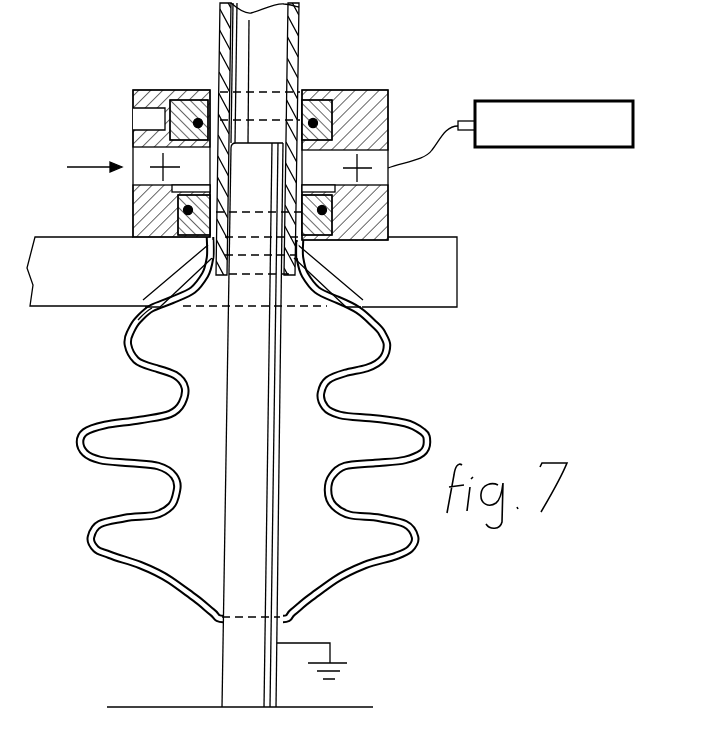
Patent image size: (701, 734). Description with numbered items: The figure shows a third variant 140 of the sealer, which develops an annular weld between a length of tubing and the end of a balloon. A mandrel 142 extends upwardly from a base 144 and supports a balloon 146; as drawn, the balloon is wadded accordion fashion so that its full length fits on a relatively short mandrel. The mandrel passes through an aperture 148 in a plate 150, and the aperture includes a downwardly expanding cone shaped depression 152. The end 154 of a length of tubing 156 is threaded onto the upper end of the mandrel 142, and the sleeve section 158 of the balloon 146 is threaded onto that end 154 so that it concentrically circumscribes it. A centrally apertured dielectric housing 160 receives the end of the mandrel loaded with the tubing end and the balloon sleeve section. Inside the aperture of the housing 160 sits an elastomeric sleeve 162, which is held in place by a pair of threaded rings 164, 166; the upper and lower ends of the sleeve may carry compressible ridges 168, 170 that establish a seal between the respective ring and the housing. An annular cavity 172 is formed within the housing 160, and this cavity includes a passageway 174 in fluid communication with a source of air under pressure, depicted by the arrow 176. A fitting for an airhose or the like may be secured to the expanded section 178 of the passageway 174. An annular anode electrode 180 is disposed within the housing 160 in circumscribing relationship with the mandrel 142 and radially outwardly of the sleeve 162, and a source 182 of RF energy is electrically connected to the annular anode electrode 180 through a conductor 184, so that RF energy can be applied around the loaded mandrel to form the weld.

The variant 140 is at (432, 618).
The mandrel 142 is at (222, 653).
The base 144 is at (167, 705).
The balloon 146 is at (428, 432).
The aperture 148 is at (207, 243).
The plate 150 is at (57, 308).
The cone shaped depression 152 is at (137, 306).
The end of tubing 154 is at (211, 306).
The length of tubing 156 is at (299, 30).
The sleeve section 158 is at (320, 300).
The dielectric housing 160 is at (389, 133).
The elastomeric sleeve 162 is at (347, 192).
The threaded ring 164 is at (310, 90).
The threaded ring 166 is at (323, 240).
The compressible ridge 168 is at (320, 122).
The compressible ridge 170 is at (325, 212).
The annular cavity 172 is at (196, 122).
The passageway 174 is at (163, 147).
The arrow 176 is at (87, 168).
The expanded section 178 is at (137, 112).
The annular anode electrode 180 is at (388, 175).
The source of RF energy 182 is at (590, 148).
The conductor 184 is at (447, 127).